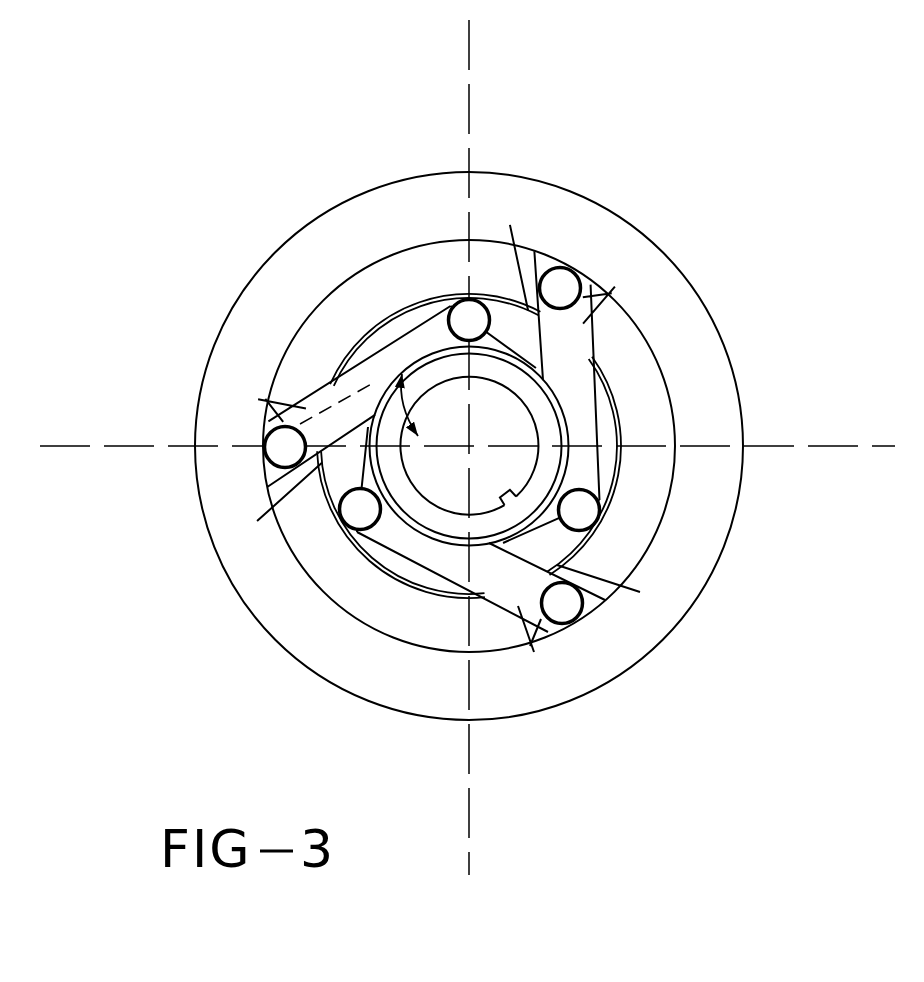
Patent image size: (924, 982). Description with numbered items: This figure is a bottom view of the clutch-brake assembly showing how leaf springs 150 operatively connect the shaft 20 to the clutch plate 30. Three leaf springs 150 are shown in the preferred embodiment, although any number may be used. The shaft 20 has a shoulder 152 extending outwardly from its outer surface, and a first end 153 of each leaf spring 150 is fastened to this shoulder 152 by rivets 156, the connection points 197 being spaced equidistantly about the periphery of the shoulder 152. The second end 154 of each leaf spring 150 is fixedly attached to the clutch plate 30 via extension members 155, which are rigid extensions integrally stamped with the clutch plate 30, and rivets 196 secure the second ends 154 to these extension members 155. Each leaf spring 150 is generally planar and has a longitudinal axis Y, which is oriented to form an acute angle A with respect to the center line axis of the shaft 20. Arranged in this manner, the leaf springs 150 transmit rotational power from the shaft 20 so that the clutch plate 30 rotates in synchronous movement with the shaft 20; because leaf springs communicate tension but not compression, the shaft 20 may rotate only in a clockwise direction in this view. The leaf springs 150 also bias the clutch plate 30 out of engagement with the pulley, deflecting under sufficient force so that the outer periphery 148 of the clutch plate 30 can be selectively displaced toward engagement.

The shaft 20 is at (634, 466).
The clutch plate 30 is at (690, 328).
The outer periphery 148 is at (667, 297).
The leaf springs 150 is at (576, 352).
The shoulder 152 is at (506, 320).
The first end 153 is at (327, 533).
The second end 154 is at (605, 608).
The extension members 155 is at (340, 375).
The rivets 156 is at (606, 512).
The rivets 196 is at (562, 283).
The connection points 197 is at (448, 283).
The acute angle A is at (262, 425).
The longitudinal axis Y is at (346, 380).